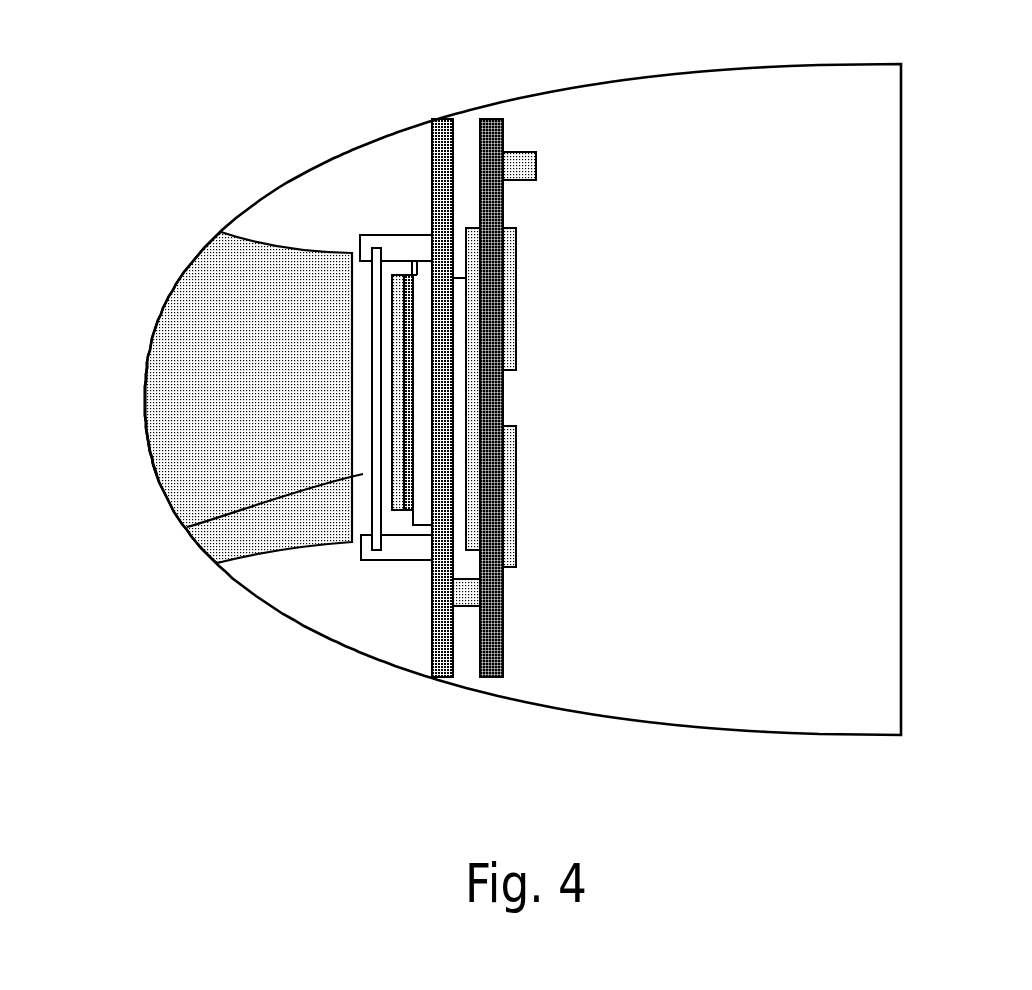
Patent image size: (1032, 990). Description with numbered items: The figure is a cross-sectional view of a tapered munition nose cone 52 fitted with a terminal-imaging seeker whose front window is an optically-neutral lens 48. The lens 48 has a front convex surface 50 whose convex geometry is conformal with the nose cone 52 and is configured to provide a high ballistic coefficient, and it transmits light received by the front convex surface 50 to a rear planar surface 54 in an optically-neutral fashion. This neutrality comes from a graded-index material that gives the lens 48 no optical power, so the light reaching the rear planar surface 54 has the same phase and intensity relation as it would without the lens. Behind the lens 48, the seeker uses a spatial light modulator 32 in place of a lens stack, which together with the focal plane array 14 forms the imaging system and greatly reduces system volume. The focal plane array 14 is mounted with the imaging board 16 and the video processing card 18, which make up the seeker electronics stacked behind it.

The focal plane array 14 is at (415, 400).
The imaging board 16 is at (443, 119).
The video processing card 18 is at (507, 653).
The spatial light modulator 32 is at (372, 516).
The optically-neutral lens 48 is at (207, 330).
The front convex surface 50 is at (147, 438).
The nose cone 52 is at (268, 190).
The rear planar surface 54 is at (187, 527).